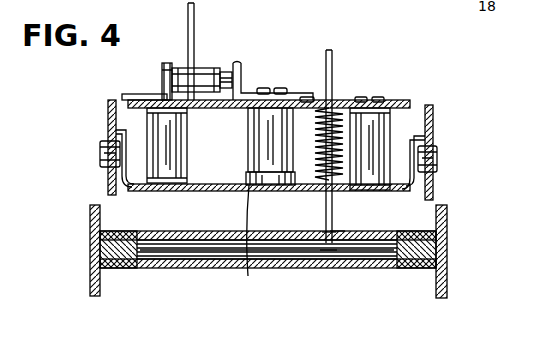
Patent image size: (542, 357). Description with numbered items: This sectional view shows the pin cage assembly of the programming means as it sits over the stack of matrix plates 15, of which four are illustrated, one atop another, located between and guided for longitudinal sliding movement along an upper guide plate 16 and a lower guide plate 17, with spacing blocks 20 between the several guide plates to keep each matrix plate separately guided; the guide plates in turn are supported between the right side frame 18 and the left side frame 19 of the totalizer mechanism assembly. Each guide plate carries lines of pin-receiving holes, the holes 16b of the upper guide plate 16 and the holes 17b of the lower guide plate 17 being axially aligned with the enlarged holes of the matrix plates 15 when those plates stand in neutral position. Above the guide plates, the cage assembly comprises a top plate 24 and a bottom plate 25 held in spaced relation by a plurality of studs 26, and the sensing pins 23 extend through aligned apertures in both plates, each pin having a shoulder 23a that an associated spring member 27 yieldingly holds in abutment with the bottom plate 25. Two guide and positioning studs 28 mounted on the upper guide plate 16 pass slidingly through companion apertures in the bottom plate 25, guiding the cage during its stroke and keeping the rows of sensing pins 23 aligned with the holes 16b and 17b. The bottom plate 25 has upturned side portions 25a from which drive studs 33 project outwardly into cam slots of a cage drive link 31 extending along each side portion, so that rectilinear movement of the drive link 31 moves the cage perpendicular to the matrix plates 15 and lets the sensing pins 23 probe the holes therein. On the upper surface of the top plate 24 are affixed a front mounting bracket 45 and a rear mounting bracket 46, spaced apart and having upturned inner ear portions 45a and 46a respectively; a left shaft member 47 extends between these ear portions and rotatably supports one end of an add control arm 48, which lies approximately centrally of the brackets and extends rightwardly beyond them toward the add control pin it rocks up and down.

The matrix plate 15 is at (167, 250).
The upper guide plate 16 is at (211, 231).
The holes 16b is at (337, 234).
The lower guide plate 17 is at (207, 268).
The holes 17b is at (327, 268).
The right side frame 18 is at (446, 218).
The left side frame 19 is at (91, 278).
The spacing blocks 20 is at (116, 245).
The sensing pins 23 is at (334, 60).
The shoulder 23a is at (324, 195).
The top plate 24 is at (406, 104).
The bottom plate 25 is at (206, 185).
The upturned side portions 25a is at (110, 132).
The studs 26 is at (184, 134).
The spring member 27 is at (340, 106).
The guide and positioning studs 28 is at (262, 241).
The cage drive link 31 is at (108, 180).
The drive studs 33 is at (106, 153).
The front mounting bracket 45 is at (312, 72).
The upturned inner ear portion 45a is at (240, 75).
The rear mounting bracket 46 is at (143, 94).
The upturned inner ear portion 46a is at (168, 62).
The left shaft member 47 is at (243, 80).
The add control arm 48 is at (195, 35).